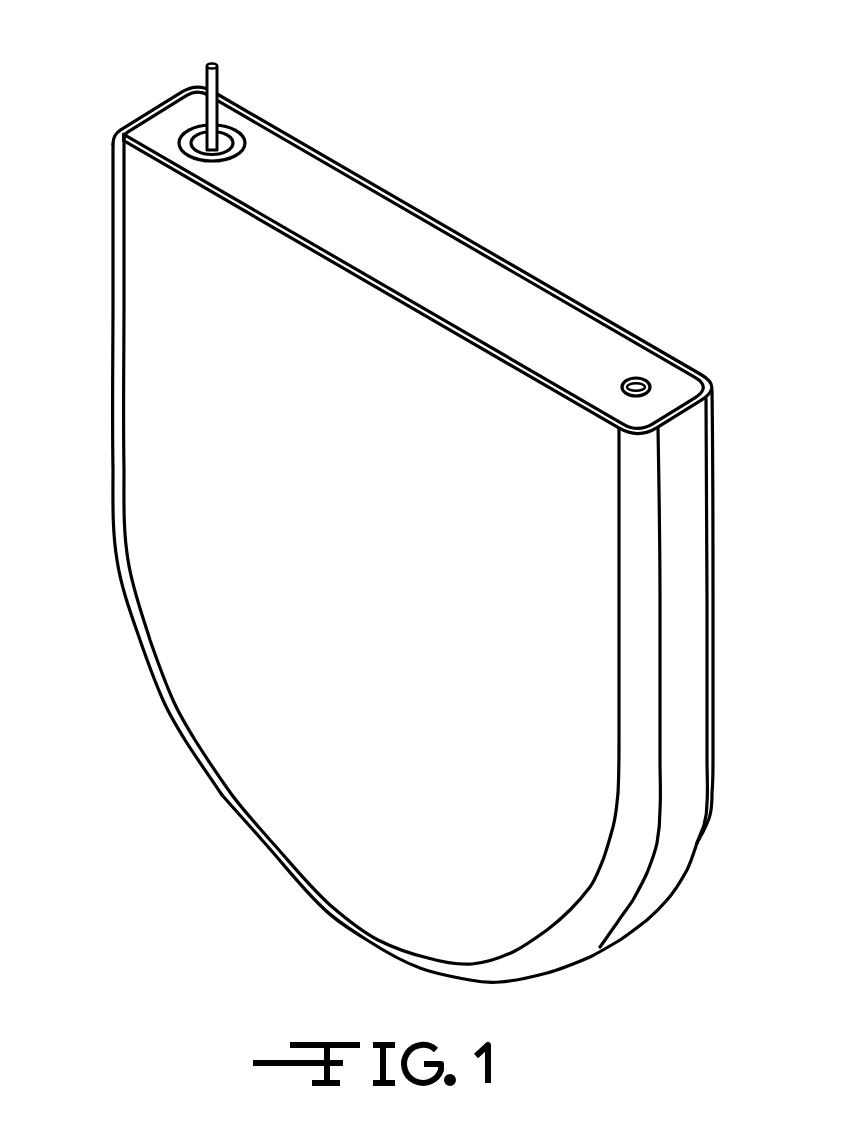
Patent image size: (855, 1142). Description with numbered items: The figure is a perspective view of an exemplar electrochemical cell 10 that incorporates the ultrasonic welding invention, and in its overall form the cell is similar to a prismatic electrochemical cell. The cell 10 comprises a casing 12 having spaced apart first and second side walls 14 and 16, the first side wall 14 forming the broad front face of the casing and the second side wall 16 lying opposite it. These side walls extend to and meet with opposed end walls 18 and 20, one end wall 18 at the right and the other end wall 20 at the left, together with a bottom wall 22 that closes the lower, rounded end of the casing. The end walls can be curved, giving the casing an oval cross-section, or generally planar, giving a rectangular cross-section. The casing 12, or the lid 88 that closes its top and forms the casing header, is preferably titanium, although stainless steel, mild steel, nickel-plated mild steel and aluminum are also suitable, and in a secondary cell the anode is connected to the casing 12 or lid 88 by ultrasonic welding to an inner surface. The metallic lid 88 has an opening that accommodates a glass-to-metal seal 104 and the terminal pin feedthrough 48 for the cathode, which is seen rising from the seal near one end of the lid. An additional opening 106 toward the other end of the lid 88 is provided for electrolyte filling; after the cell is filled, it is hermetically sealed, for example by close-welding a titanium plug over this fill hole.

The electrochemical cell 10 is at (533, 226).
The casing 12 is at (170, 330).
The first side wall 14 is at (288, 753).
The second side wall 16 is at (713, 474).
The end wall 18 is at (687, 628).
The end wall 20 is at (113, 231).
The bottom wall 22 is at (323, 907).
The terminal pin feedthrough 48 is at (220, 73).
The lid 88 is at (375, 237).
The glass-to-metal seal 104 is at (196, 139).
The opening 106 is at (631, 377).